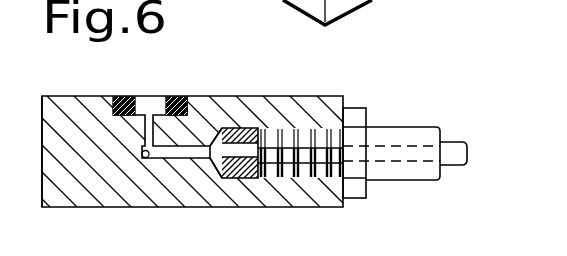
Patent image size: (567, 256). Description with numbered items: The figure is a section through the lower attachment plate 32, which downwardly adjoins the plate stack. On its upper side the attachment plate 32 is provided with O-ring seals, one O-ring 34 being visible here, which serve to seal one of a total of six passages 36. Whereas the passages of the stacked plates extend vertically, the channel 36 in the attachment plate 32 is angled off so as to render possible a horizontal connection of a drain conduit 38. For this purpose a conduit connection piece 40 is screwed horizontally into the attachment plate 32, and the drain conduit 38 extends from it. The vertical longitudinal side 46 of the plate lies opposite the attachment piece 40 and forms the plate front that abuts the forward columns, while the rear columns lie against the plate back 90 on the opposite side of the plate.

The attachment plate 32 is at (228, 96).
The O-ring 34 is at (124, 96).
The passage 36 is at (196, 150).
The drain conduit 38 is at (451, 150).
The conduit connection piece 40 is at (357, 114).
The vertical longitudinal side 46 is at (42, 125).
The plate back 90 is at (344, 100).